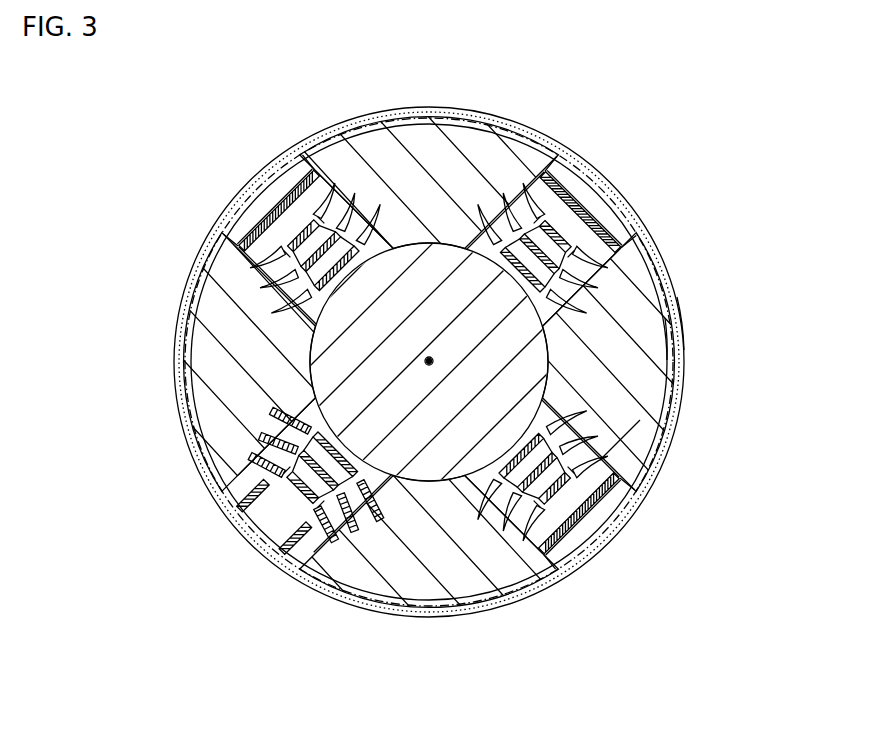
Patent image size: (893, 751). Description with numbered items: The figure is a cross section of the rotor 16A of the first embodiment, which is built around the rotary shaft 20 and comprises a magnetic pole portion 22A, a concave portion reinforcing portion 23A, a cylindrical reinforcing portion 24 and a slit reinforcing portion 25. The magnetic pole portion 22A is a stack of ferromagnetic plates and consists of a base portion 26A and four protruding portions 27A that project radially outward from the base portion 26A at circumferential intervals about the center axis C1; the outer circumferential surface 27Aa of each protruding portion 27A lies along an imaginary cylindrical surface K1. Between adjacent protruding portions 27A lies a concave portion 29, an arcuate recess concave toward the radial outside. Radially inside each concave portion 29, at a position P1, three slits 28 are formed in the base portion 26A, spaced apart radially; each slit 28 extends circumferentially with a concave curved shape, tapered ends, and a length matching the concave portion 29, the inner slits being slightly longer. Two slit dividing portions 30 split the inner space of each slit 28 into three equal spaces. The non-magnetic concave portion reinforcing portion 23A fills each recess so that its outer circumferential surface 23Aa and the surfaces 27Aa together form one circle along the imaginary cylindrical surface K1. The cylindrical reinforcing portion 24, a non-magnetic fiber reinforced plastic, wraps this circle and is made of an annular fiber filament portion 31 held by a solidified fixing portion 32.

The rotor 16A is at (693, 127).
The rotary shaft 20 is at (543, 360).
The magnetic pole portion 22A is at (452, 192).
The concave portion reinforcing portion 23A is at (583, 190).
The outer circumferential surface of the concave portion reinforcing portion 23Aa is at (285, 152).
The cylindrical reinforcing portion 24 is at (656, 252).
The slit reinforcing portion 25 is at (323, 200).
The base portion 26A is at (632, 441).
The protruding portion 27A is at (414, 133).
The outer circumferential surface of the protruding portion 27Aa is at (681, 330).
The slit 28 is at (298, 240).
The concave portion 29 is at (312, 216).
The slit dividing portion 30 is at (300, 428).
The filament portion 31 is at (523, 130).
The fixing portion 32 is at (553, 146).
The center axis C1 is at (429, 366).
The imaginary cylindrical surface K1 is at (675, 302).
The position P1 is at (296, 228).